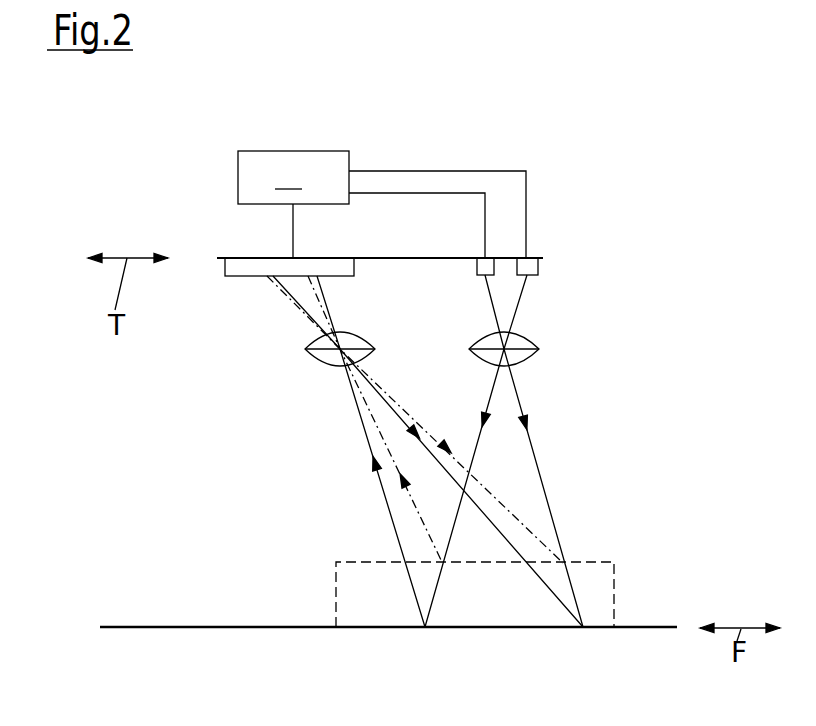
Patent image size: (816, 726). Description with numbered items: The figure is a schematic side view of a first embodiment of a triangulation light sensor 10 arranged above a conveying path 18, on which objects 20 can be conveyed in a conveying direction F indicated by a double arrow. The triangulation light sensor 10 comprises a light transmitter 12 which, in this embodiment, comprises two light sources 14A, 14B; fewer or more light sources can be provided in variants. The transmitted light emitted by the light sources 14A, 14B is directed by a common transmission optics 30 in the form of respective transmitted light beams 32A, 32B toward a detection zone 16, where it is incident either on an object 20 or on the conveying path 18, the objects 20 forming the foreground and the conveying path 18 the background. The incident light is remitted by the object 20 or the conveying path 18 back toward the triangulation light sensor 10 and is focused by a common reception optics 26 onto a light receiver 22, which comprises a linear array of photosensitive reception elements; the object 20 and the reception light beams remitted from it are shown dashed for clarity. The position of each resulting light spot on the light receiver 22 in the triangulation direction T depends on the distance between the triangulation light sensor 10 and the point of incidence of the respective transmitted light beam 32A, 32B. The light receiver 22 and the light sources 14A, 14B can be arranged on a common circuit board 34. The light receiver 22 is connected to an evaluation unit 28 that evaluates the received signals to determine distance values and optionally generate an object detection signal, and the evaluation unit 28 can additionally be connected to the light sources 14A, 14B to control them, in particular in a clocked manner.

The triangulation light sensor 10 is at (86, 199).
The light transmitter 12 is at (580, 262).
The light source 14A is at (477, 272).
The light source 14B is at (532, 268).
The detection zone 16 is at (606, 510).
The conveying path 18 is at (236, 630).
The object 20 is at (615, 590).
The light receiver 22 is at (240, 268).
The common reception optics 26 is at (325, 357).
The evaluation unit 28 is at (382, 204).
The common transmission optics 30 is at (525, 357).
The transmitted light beam 32A is at (535, 452).
The transmitted light beam 32B is at (488, 405).
The common circuit board 34 is at (240, 258).